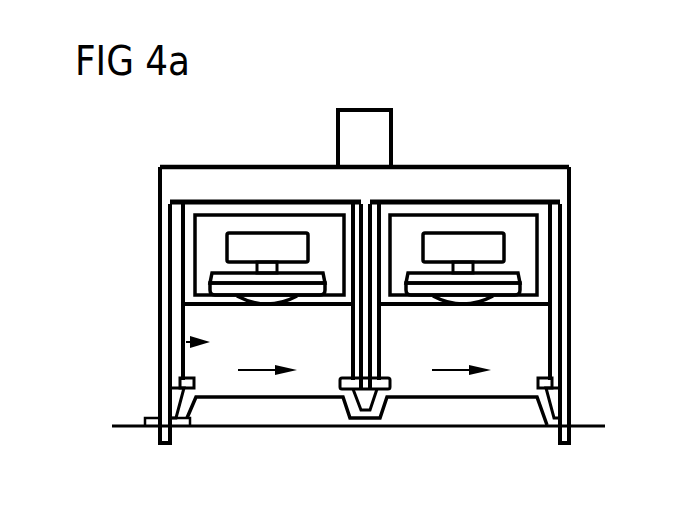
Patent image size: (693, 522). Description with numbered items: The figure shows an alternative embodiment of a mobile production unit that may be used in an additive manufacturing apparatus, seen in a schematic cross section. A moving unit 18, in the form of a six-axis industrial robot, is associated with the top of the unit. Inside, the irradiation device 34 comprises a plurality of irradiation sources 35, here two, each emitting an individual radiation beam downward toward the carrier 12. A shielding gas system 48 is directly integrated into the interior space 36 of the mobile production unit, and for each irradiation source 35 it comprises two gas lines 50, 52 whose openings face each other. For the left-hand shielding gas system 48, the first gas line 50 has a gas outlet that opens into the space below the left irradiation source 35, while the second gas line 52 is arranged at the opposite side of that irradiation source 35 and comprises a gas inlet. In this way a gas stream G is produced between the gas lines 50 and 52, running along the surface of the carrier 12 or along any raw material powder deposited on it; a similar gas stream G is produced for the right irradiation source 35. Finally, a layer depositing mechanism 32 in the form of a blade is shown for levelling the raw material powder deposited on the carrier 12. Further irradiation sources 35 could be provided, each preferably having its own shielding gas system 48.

The carrier 12 is at (588, 428).
The moving unit 18 is at (368, 120).
The layer depositing mechanism 32 is at (205, 418).
The irradiation device 34 is at (295, 225).
The irradiation source 35 is at (247, 247).
The interior space 36 is at (183, 342).
The shielding gas system 48 is at (146, 298).
The first gas line 50 is at (173, 232).
The second gas line 52 is at (357, 333).
The gas stream G is at (262, 372).